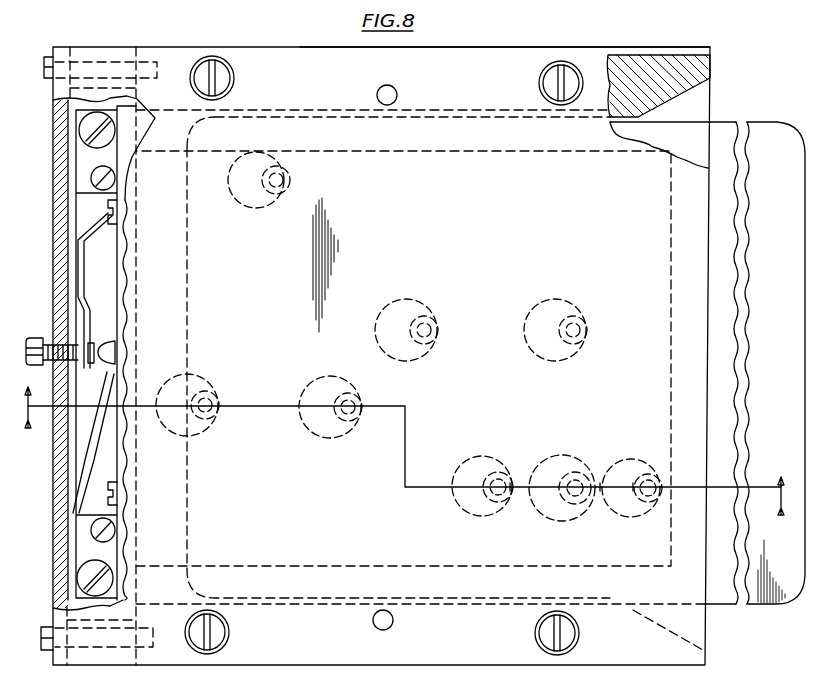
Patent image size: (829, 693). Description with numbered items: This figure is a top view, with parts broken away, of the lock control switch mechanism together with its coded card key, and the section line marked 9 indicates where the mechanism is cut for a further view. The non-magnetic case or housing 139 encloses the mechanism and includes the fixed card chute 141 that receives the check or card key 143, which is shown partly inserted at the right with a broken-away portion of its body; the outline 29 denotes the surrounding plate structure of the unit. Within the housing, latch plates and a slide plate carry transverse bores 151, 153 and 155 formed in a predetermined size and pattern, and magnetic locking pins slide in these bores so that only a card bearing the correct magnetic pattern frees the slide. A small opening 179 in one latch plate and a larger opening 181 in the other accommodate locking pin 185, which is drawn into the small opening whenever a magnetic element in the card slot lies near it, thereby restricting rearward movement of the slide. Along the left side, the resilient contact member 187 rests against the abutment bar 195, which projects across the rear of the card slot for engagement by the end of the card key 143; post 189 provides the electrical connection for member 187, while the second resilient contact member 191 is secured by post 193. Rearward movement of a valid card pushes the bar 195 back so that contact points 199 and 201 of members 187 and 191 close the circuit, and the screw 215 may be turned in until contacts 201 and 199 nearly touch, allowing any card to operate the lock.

The housing base plate 29 is at (200, 47).
The case or housing 139 is at (533, 50).
The card chute 141 is at (700, 90).
The card key 143 is at (768, 126).
The post 193 is at (108, 138).
The resilient contact member 191 is at (79, 270).
The abutment bar 195 is at (113, 268).
The contact point 199 is at (104, 343).
The screw 215 is at (38, 338).
The contact point 201 is at (88, 362).
The resilient contact member 187 is at (100, 462).
The post 189 is at (110, 582).
The transverse bore 155 is at (458, 472).
The transverse bore 153 is at (498, 478).
The transverse bore 151 is at (512, 482).
The small opening 179 is at (590, 478).
The larger opening 181 is at (553, 510).
The locking pin 185 is at (582, 500).
The section line 9- 9 is at (401, 441).